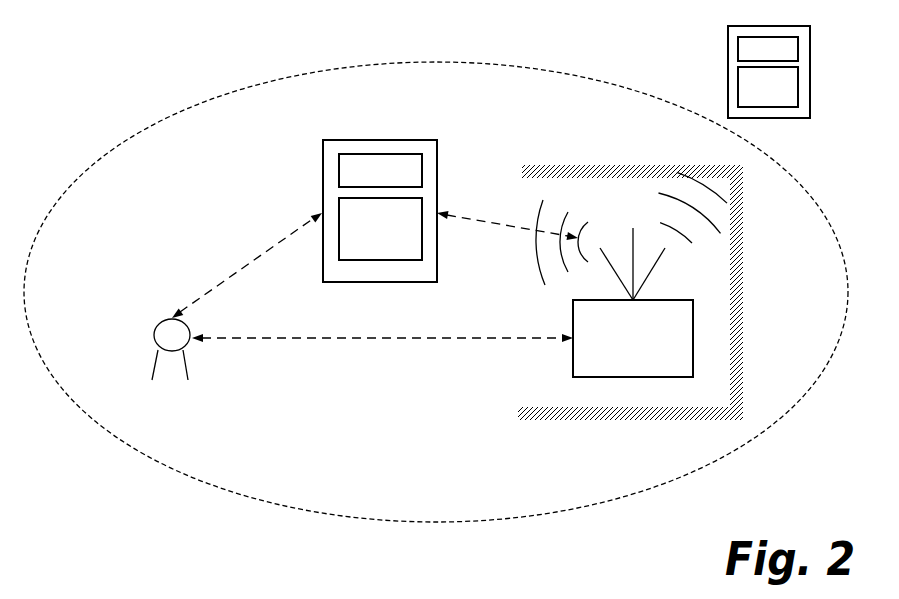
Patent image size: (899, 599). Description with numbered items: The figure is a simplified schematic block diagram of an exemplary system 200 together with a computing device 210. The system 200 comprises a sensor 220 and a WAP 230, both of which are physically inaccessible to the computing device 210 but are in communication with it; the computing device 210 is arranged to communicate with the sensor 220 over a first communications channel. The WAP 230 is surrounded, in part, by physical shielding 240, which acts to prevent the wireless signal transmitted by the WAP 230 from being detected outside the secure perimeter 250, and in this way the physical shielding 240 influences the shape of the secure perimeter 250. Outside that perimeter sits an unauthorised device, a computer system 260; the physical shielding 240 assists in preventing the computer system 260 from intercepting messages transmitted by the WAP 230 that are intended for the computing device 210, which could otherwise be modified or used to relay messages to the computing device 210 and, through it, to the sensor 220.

The system 200 is at (198, 92).
The computing device 210 is at (378, 140).
The sensor 220 is at (152, 340).
The WAP 230 is at (572, 365).
The physical shielding 240 is at (632, 420).
The secure perimeter 250 is at (380, 65).
The computer system 260 is at (727, 70).